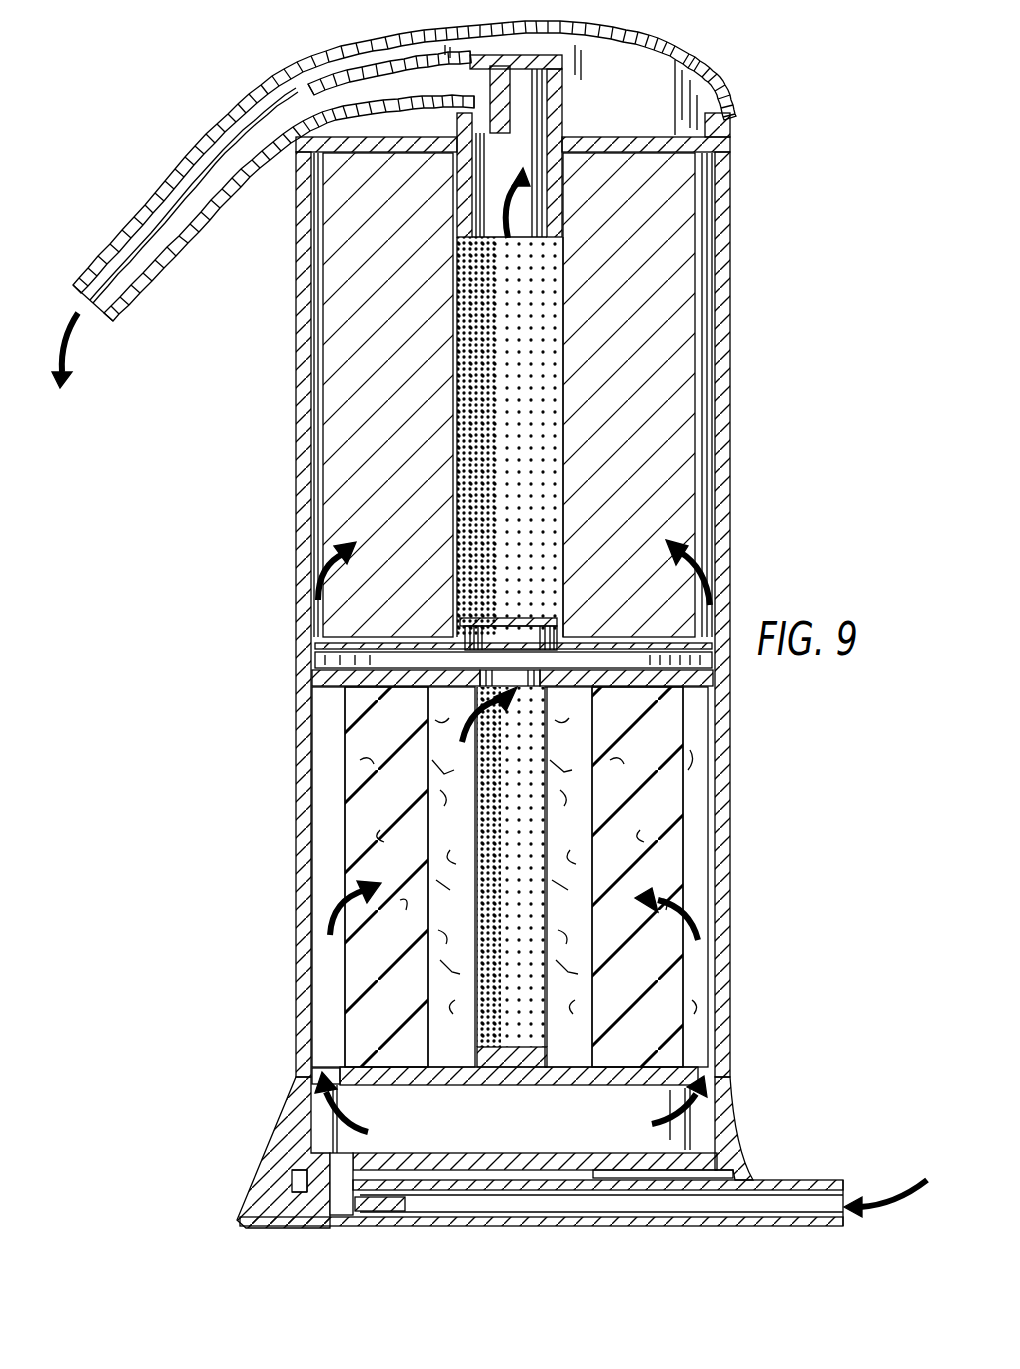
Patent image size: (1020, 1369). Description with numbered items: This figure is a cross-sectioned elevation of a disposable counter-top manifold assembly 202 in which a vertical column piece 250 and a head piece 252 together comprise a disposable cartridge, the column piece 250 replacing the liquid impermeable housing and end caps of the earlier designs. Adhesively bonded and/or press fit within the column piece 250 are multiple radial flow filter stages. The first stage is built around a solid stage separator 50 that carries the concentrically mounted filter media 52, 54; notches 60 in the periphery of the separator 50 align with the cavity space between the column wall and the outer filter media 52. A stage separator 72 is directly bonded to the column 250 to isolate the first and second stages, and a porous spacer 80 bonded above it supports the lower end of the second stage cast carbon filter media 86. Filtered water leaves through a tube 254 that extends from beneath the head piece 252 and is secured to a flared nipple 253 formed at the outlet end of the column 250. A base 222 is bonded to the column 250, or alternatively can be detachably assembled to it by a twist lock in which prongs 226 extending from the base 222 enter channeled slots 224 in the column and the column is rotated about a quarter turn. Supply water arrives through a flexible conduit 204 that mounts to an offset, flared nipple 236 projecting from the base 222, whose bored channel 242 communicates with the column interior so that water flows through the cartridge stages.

The disposable manifold assembly 202 is at (222, 578).
The vertical column piece 250 is at (733, 585).
The head piece 252 is at (655, 45).
The flared nipple 253 is at (463, 73).
The tube 254 is at (84, 313).
The carbon filter media 86 is at (673, 430).
The porous spacer 80 is at (311, 640).
The stage separator 72 is at (697, 683).
The filter media element 52 is at (443, 797).
The filter media element 54 is at (373, 858).
The stage separator 50 is at (700, 1062).
The notches 60 is at (317, 1072).
The prongs 226 is at (303, 1173).
The channeled slots 224 is at (307, 1200).
The base 222 is at (347, 1230).
The bored channel 242 is at (360, 1228).
The flared nipple 236 is at (405, 1230).
The conduit 204 is at (730, 1228).